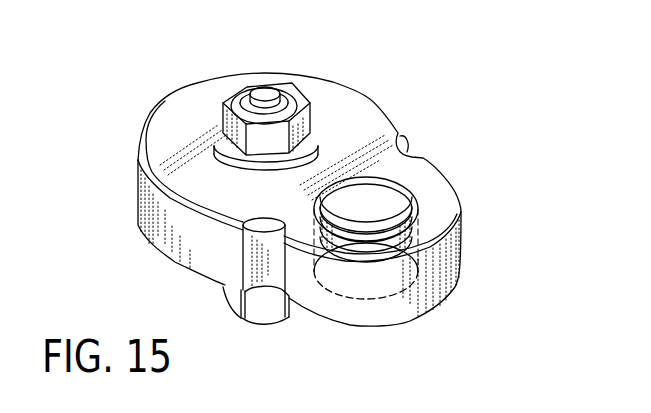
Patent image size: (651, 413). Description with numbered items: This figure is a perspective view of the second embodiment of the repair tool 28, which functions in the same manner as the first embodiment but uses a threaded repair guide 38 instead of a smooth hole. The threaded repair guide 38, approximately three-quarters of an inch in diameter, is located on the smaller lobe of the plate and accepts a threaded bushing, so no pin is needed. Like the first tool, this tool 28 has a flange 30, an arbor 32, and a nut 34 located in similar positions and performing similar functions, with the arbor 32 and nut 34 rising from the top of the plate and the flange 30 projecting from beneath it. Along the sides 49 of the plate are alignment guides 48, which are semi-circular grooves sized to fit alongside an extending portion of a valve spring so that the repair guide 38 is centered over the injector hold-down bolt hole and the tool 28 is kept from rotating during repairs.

The tool 28 is at (412, 97).
The arbor 32 is at (268, 92).
The nut 34 is at (216, 117).
The repair guide 38 is at (402, 203).
The sides 49 is at (153, 238).
The flange 30 is at (216, 297).
The alignment guides 48 is at (268, 268).